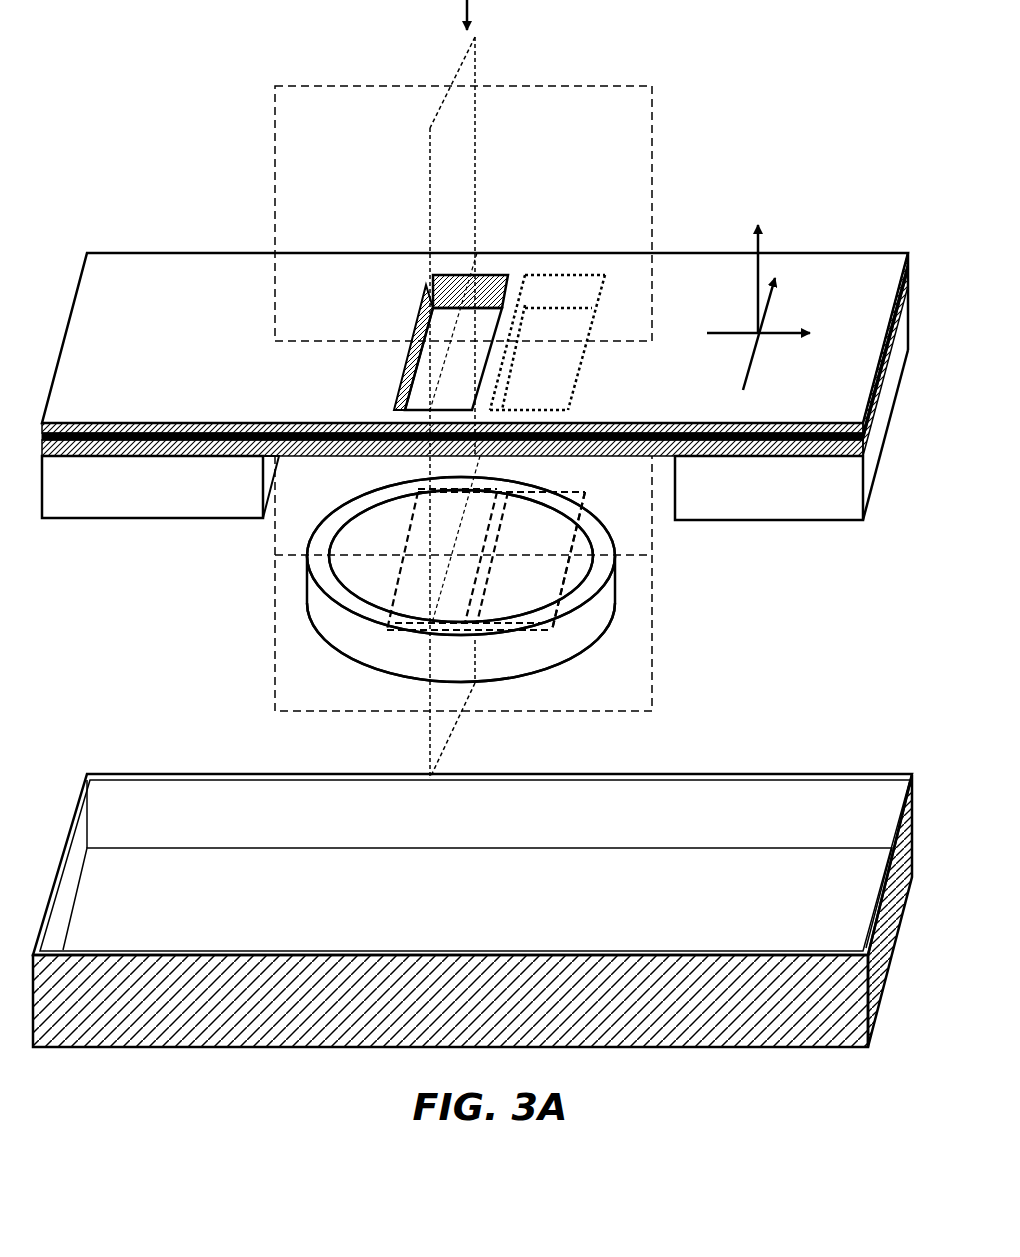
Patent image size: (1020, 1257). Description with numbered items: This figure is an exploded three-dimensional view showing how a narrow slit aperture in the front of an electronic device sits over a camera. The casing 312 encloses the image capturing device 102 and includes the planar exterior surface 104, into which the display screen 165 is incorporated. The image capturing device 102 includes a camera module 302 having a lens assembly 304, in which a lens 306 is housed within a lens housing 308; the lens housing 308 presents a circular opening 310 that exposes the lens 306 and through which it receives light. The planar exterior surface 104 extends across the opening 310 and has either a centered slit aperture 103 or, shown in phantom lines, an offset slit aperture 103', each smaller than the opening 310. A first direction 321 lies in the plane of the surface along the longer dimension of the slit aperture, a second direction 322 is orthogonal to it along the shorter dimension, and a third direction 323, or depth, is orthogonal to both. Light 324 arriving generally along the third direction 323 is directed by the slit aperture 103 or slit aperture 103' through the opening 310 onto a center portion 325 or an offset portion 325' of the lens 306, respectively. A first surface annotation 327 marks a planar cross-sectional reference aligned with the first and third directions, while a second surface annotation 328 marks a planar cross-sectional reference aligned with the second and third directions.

The image capturing device 102 is at (262, 556).
The slit aperture 103 is at (466, 305).
The slit aperture 103' is at (564, 303).
The planar exterior surface 104 is at (148, 272).
The display screen 165 is at (297, 438).
The camera module 302 is at (332, 620).
The lens assembly 304 is at (575, 578).
The lens 306 is at (385, 532).
The lens housing 308 is at (568, 645).
The opening 310 is at (360, 517).
The casing 312 is at (837, 778).
The first direction 321 is at (765, 310).
The second direction 322 is at (733, 333).
The third direction 323 is at (760, 243).
The light 324 is at (471, 6).
The center portion 325 is at (398, 559).
The offset portion 325' is at (646, 561).
The first surface annotation 327 is at (477, 62).
The second surface annotation 328 is at (654, 140).